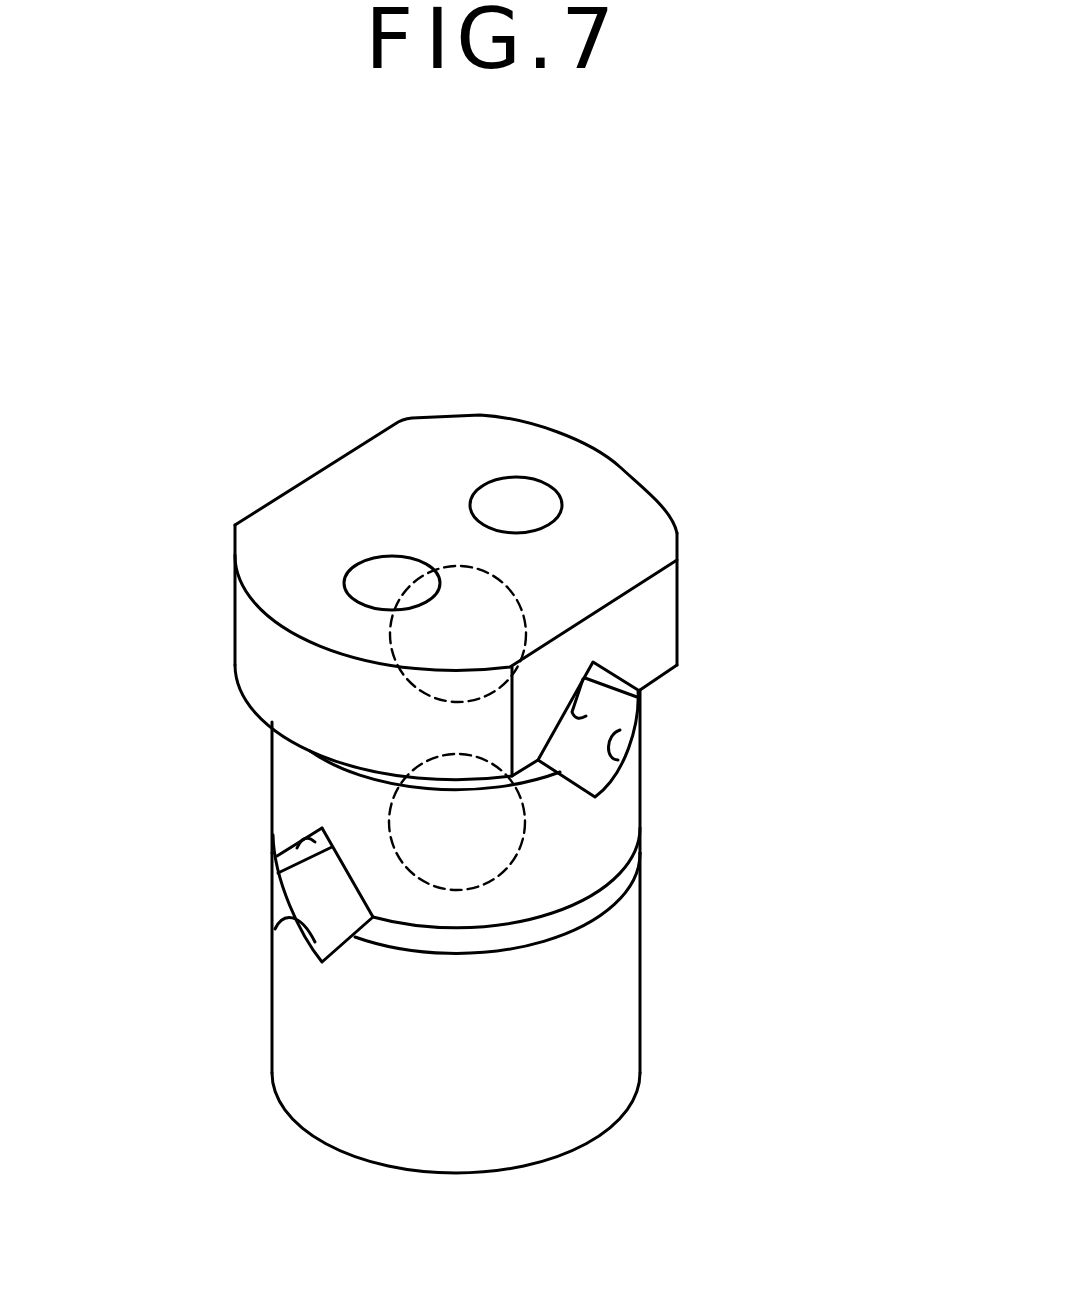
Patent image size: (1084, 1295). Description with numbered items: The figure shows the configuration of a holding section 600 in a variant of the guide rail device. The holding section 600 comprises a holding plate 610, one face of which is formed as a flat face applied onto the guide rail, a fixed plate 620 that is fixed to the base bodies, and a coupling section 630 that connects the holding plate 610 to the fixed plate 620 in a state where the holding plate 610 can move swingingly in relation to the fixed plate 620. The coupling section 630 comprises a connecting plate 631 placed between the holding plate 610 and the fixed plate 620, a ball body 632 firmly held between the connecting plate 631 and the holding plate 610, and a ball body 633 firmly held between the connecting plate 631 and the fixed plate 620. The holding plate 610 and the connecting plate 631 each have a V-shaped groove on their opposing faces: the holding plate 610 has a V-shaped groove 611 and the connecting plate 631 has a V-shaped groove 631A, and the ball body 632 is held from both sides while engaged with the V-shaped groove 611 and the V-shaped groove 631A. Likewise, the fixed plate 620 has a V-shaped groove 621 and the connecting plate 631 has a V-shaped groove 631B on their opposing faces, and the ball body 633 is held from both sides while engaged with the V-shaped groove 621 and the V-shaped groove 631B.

The holding section 600 is at (690, 404).
The holding plate 610 is at (633, 520).
The V-shaped groove 611 is at (643, 643).
The fixed plate 620 is at (623, 1007).
The V-shaped groove 621 is at (278, 928).
The coupling section 630 is at (760, 838).
The connecting plate 631 is at (627, 822).
The V-shaped groove 631A is at (640, 727).
The V-shaped groove 631B is at (283, 846).
The ball body 632 is at (413, 657).
The ball body 633 is at (423, 833).